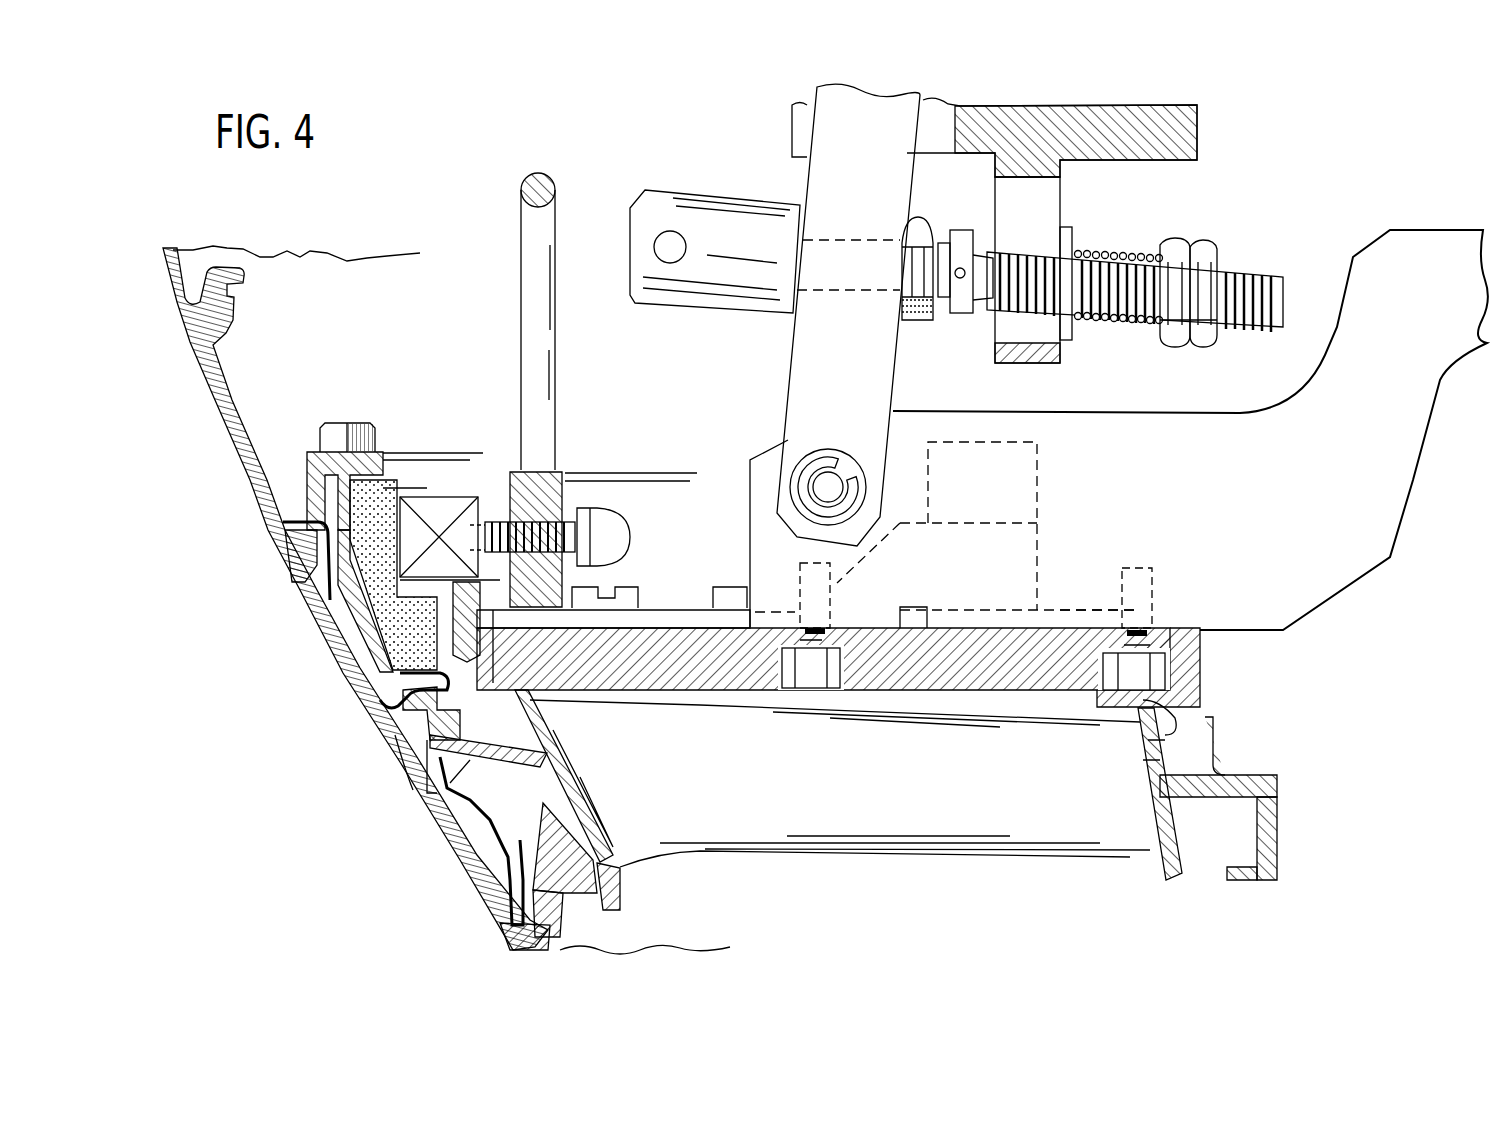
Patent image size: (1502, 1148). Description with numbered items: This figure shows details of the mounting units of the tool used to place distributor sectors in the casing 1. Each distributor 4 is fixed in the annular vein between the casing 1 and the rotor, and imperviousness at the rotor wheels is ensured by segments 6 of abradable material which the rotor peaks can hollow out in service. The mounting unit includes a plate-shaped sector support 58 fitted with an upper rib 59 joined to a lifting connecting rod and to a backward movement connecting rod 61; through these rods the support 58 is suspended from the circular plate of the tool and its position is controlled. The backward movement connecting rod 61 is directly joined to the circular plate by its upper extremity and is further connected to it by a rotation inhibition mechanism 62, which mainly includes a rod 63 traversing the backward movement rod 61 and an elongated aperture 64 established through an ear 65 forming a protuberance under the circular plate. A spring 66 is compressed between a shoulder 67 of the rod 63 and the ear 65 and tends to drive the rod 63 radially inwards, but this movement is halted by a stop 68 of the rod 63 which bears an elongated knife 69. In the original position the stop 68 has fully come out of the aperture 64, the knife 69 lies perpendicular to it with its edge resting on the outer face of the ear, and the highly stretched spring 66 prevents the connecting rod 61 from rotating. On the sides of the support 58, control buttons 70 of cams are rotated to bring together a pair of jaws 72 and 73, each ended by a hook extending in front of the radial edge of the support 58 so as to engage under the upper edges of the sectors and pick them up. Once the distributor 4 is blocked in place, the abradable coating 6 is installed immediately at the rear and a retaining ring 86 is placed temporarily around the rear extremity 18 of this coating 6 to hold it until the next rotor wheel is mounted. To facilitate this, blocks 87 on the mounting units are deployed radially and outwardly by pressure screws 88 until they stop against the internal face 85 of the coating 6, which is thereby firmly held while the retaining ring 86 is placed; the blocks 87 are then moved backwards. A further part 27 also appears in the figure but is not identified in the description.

The casing 1 is at (252, 498).
The distributor 4 is at (966, 853).
The abradable coating 6 is at (400, 655).
The rear extremity 18 is at (365, 425).
The sheet bracket 27 is at (808, 815).
The sector support 58 is at (1182, 640).
The upper rib 59 is at (1325, 578).
The backward movement connecting rod 61 is at (836, 183).
The rotation inhibition mechanism 62 is at (636, 192).
The rod 63 is at (1260, 285).
The elongated aperture 64 is at (1045, 350).
The ear 65 is at (1008, 368).
The spring 66 is at (1103, 252).
The shoulder 67 is at (1180, 245).
The stop 68 is at (965, 232).
The elongated knife 69 is at (985, 318).
The control buttons 70 is at (1037, 475).
The jaw 72 is at (705, 617).
The jaw 73 is at (1075, 610).
The internal face 85 is at (417, 497).
The retaining ring 86 is at (310, 455).
The blocks 87 is at (470, 495).
The pressure screws 88 is at (615, 520).